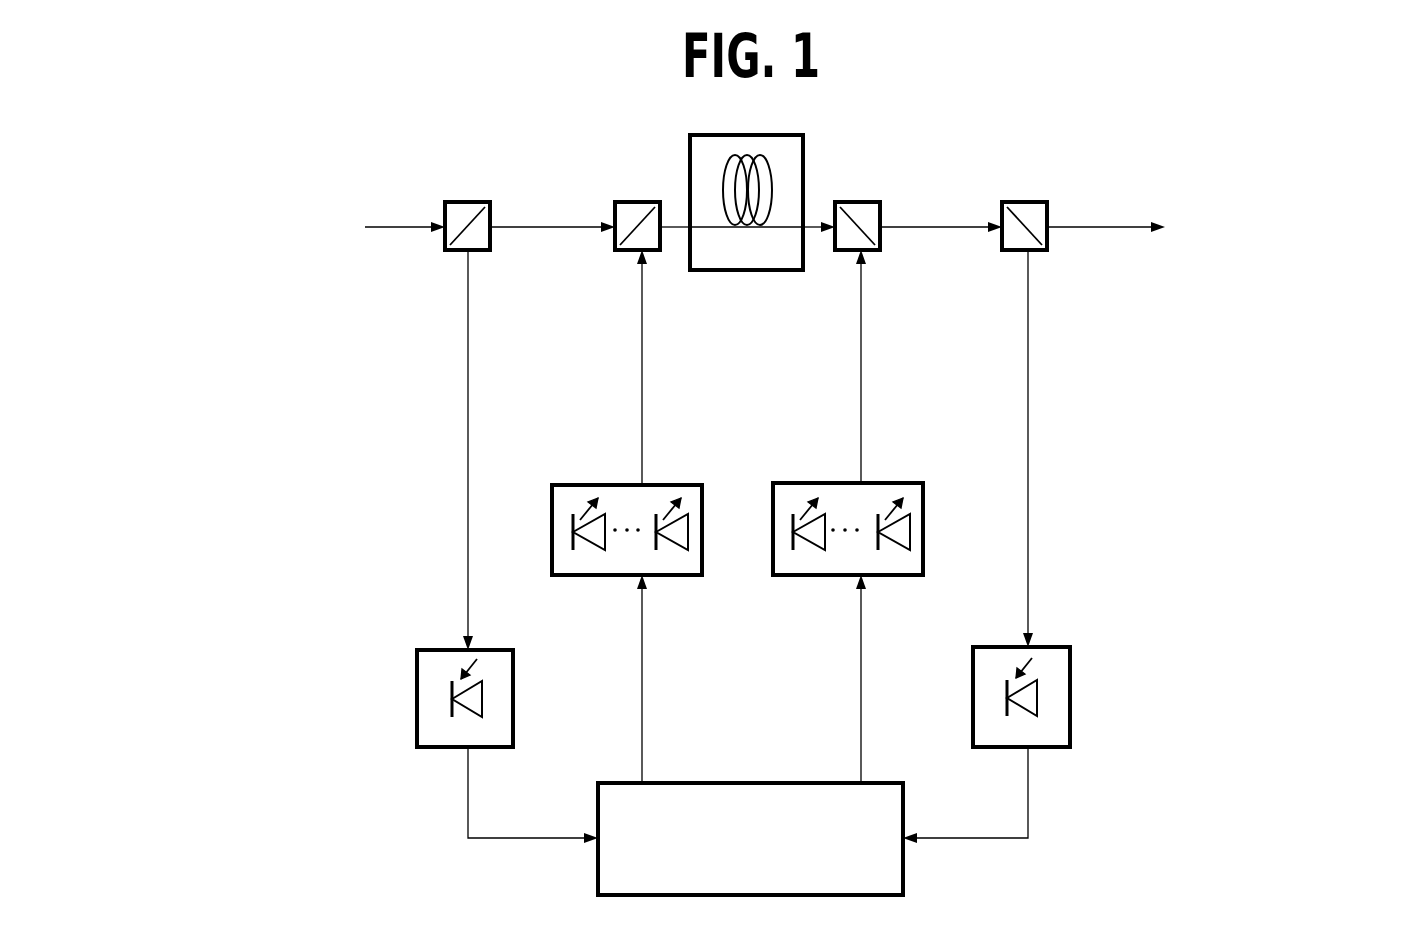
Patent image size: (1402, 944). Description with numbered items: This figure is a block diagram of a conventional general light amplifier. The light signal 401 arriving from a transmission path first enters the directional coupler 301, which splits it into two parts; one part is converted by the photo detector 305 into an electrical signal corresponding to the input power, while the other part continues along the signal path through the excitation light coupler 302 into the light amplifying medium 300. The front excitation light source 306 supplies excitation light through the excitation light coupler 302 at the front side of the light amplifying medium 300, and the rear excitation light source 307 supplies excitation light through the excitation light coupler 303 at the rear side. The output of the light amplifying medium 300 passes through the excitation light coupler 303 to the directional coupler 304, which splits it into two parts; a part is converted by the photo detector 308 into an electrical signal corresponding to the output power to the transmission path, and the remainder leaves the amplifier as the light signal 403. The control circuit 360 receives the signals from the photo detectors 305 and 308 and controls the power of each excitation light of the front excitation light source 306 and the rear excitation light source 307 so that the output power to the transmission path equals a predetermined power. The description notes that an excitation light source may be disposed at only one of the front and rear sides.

The light amplifying medium 300 is at (752, 134).
The directional coupler 301 is at (472, 200).
The excitation light coupler 302 is at (642, 200).
The excitation light coupler 303 is at (874, 200).
The directional coupler 304 is at (1039, 200).
The photo detector 305 is at (417, 697).
The front excitation light source 306 is at (573, 484).
The rear excitation light source 307 is at (898, 482).
The photo detector 308 is at (1072, 695).
The control circuit 360 is at (753, 782).
The light signal 401 is at (306, 228).
The light signal 403 is at (1206, 228).